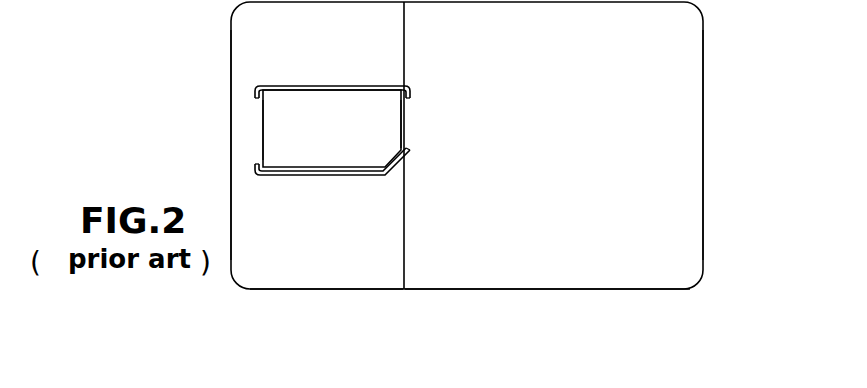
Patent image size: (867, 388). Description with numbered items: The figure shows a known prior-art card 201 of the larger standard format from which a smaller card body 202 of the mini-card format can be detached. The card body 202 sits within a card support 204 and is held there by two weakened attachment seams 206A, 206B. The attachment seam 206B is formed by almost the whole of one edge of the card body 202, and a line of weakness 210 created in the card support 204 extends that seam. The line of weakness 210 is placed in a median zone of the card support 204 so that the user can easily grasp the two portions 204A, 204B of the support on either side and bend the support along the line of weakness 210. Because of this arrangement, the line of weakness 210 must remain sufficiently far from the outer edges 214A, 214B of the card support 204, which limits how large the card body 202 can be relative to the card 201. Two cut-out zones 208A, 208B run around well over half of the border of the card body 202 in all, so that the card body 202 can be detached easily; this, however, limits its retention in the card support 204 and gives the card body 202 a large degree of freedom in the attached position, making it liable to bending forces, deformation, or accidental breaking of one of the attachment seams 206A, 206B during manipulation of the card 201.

The card 201 is at (710, 67).
The card body 202 is at (350, 134).
The card support 204 is at (457, 321).
The portion of the support 204A is at (325, 270).
The portion of the support 204B is at (475, 258).
The attachment seam 206A is at (262, 128).
The attachment seam 206B is at (405, 125).
The cut-out zone 208A is at (322, 82).
The cut-out zone 208B is at (330, 176).
The line of weakness 210 is at (405, 38).
The outer edge of the card support 214A is at (704, 170).
The outer edge of the card support 214B is at (231, 50).